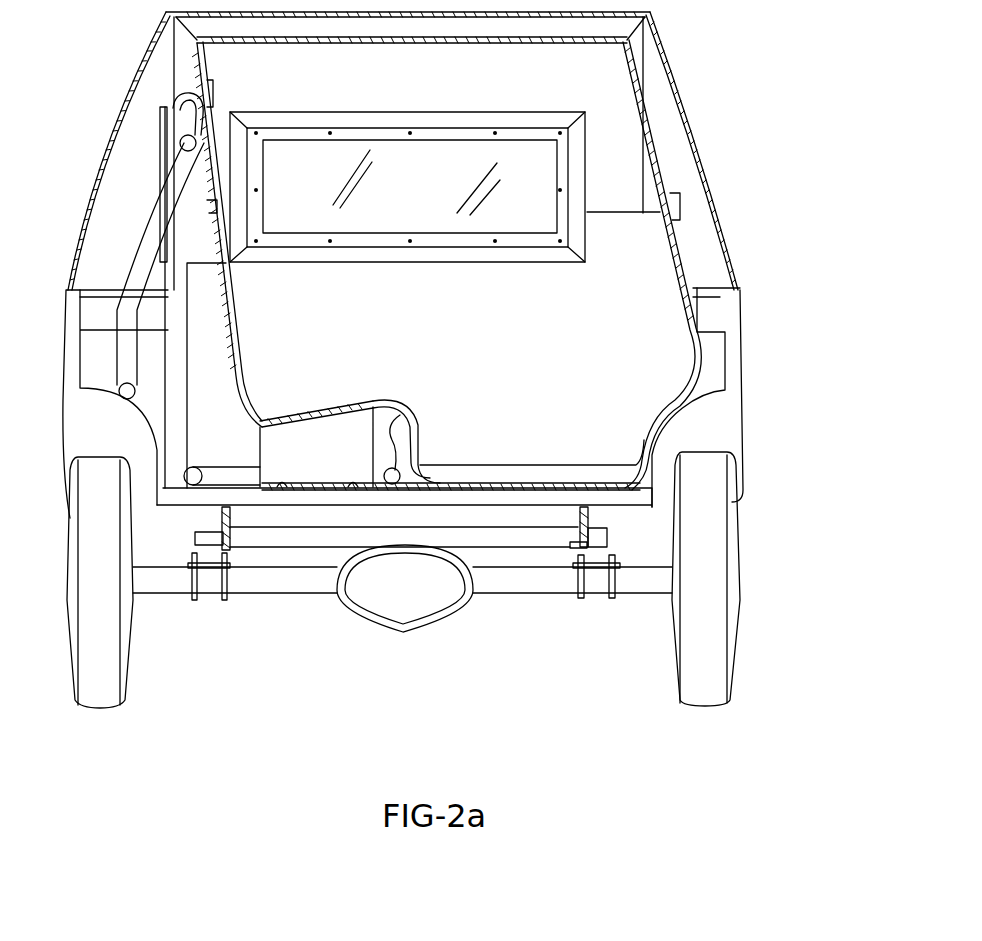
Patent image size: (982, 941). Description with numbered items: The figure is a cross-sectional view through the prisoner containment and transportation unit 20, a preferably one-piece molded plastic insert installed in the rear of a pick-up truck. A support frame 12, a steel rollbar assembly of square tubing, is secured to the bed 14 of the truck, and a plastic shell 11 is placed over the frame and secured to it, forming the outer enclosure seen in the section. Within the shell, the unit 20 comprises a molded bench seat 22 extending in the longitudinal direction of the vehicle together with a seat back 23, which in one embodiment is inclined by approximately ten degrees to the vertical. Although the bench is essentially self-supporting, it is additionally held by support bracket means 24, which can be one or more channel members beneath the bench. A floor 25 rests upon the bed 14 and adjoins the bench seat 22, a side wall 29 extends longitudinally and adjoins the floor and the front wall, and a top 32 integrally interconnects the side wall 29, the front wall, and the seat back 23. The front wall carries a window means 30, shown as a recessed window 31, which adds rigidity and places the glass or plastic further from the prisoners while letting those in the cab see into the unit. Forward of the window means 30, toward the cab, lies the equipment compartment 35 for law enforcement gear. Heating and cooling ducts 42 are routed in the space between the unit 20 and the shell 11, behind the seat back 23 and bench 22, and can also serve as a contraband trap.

The shell 11 is at (683, 107).
The support frame 12 is at (175, 392).
The bed 14 is at (643, 492).
The prisoner containment and transportation unit 20 is at (675, 188).
The molded bench seat 22 is at (322, 400).
The seat back 23 is at (233, 318).
The support bracket means 24 is at (360, 447).
The floor 25 is at (523, 488).
The side wall 29 is at (676, 263).
The window means 30 is at (505, 110).
The recessed window 31 is at (435, 222).
The top 32 is at (408, 43).
The equipment compartment 35 is at (167, 120).
The ducts 42 is at (150, 226).